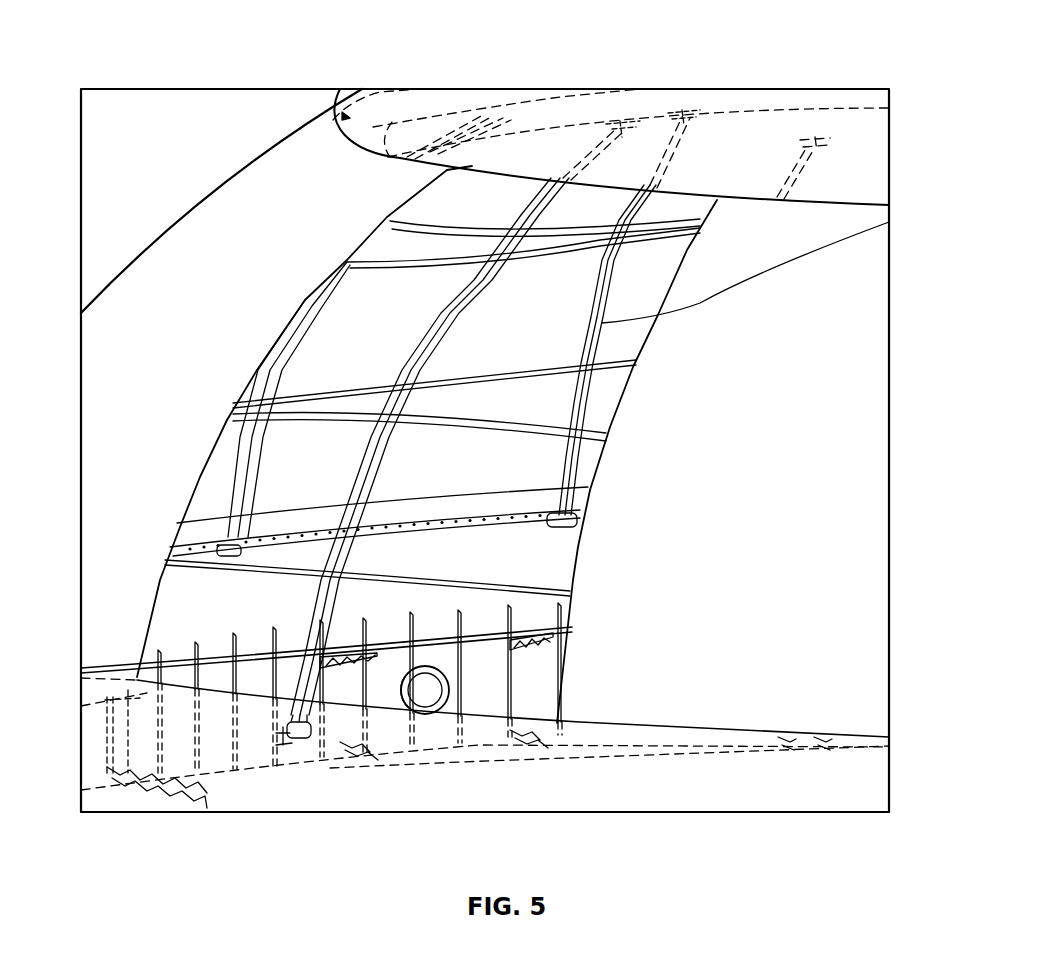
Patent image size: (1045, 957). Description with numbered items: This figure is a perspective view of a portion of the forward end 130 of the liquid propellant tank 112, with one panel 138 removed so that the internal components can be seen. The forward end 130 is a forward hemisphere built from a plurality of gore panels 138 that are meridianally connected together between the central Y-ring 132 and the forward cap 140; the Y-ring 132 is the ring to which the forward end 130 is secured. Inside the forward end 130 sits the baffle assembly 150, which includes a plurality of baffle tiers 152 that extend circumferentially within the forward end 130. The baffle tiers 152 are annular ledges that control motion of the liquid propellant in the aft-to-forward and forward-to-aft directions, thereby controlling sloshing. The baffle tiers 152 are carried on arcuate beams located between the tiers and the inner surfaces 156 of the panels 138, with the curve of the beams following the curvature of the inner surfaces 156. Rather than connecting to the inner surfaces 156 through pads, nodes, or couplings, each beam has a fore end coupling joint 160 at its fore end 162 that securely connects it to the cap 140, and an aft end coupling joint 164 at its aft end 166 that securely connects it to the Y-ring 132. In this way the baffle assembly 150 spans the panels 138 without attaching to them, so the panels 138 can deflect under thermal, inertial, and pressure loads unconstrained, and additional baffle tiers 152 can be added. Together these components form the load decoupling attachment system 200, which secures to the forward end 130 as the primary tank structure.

The liquid propellant tank 112 is at (233, 125).
The forward end 130 is at (902, 455).
The Y-ring 132 is at (93, 730).
The panels 138 is at (167, 252).
The forward cap 140 is at (872, 127).
The baffle assembly 150 is at (465, 316).
The baffle tiers 152 is at (408, 578).
The inner surfaces 156 is at (313, 318).
The fore end coupling joint 160 is at (607, 130).
The fore end 162 is at (667, 130).
The aft end coupling joint 164 is at (299, 742).
The aft end 166 is at (282, 747).
The load decoupling attachment system 200 is at (889, 222).